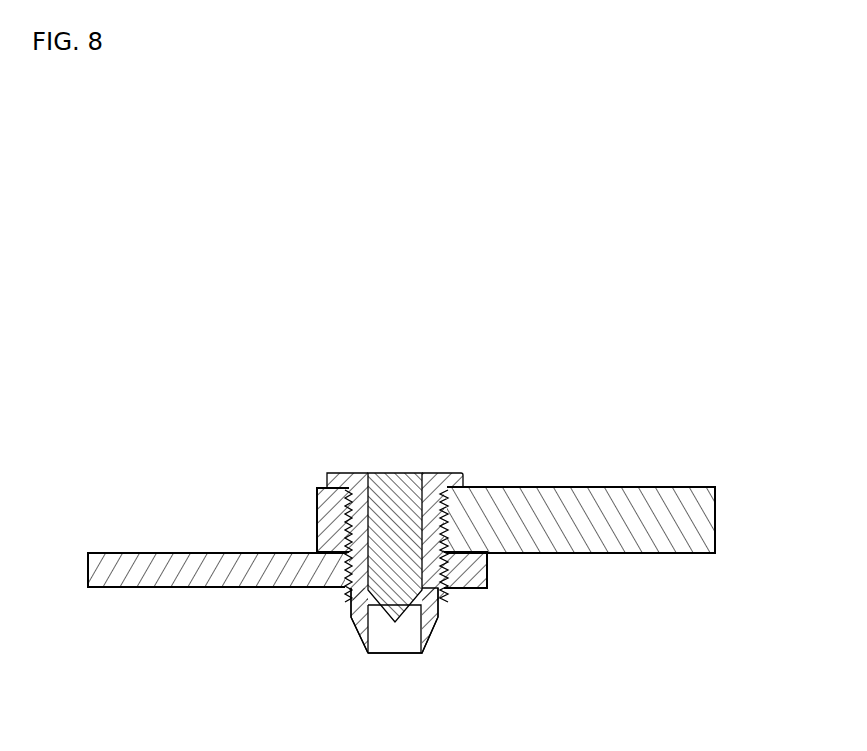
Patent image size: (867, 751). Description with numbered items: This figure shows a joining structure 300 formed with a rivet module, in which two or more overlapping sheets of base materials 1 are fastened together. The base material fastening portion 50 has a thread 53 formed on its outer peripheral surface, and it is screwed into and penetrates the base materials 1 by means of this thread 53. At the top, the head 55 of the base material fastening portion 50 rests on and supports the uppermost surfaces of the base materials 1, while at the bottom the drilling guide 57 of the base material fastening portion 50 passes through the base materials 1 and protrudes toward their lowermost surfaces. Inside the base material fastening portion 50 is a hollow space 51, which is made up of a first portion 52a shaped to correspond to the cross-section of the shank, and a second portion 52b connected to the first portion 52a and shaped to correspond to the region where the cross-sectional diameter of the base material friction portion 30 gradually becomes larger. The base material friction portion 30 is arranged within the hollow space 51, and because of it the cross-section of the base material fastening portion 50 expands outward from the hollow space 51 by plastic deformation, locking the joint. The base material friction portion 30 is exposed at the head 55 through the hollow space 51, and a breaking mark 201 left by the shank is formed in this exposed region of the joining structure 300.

The base materials 1 is at (487, 573).
The base material friction portion 30 is at (363, 574).
The base material fastening portion 50 is at (341, 522).
The hollow space 51 is at (532, 640).
The first portion 52a is at (402, 562).
The second portion 52b is at (424, 648).
The thread 53 is at (440, 494).
The head 55 is at (327, 478).
The drilling guide 57 is at (366, 610).
The breaking mark 201 is at (400, 473).
The joining structure 300 is at (418, 333).